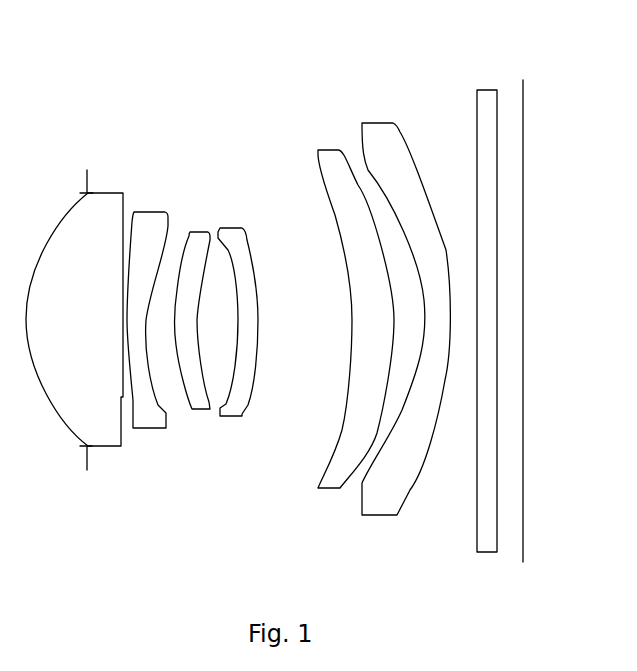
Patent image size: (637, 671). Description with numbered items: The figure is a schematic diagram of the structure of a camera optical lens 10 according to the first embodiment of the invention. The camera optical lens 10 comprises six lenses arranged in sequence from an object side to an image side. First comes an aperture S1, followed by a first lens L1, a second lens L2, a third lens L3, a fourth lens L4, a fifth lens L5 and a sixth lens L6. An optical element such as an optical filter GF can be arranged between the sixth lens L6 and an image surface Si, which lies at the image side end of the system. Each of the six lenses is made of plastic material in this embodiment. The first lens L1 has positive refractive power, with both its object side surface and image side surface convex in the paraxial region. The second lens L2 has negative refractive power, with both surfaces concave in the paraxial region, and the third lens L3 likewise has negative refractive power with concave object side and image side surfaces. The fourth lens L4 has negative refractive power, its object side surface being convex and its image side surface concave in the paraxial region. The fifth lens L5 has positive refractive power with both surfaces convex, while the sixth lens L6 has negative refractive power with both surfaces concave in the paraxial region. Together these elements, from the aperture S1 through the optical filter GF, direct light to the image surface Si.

The camera optical lens 10 is at (303, 22).
The aperture S1 is at (83, 305).
The first lens L1 is at (74, 307).
The second lens L2 is at (147, 307).
The third lens L3 is at (192, 309).
The fourth lens L4 is at (238, 312).
The fifth lens L5 is at (353, 308).
The sixth lens L6 is at (406, 305).
The optical filter GF is at (487, 307).
The image surface Si is at (520, 303).